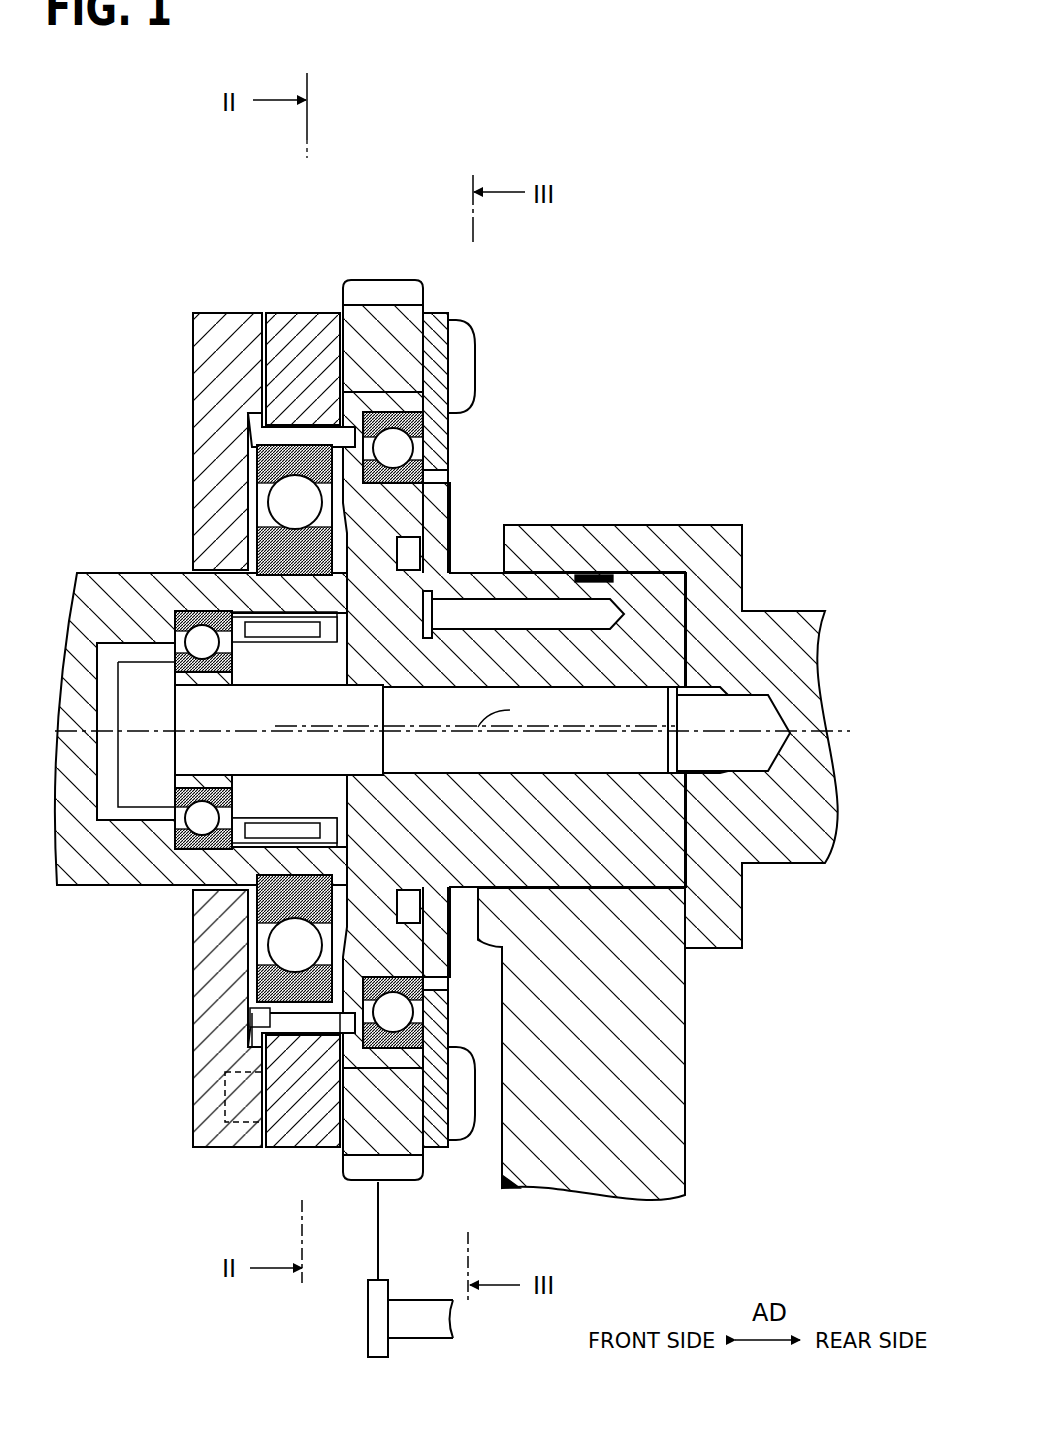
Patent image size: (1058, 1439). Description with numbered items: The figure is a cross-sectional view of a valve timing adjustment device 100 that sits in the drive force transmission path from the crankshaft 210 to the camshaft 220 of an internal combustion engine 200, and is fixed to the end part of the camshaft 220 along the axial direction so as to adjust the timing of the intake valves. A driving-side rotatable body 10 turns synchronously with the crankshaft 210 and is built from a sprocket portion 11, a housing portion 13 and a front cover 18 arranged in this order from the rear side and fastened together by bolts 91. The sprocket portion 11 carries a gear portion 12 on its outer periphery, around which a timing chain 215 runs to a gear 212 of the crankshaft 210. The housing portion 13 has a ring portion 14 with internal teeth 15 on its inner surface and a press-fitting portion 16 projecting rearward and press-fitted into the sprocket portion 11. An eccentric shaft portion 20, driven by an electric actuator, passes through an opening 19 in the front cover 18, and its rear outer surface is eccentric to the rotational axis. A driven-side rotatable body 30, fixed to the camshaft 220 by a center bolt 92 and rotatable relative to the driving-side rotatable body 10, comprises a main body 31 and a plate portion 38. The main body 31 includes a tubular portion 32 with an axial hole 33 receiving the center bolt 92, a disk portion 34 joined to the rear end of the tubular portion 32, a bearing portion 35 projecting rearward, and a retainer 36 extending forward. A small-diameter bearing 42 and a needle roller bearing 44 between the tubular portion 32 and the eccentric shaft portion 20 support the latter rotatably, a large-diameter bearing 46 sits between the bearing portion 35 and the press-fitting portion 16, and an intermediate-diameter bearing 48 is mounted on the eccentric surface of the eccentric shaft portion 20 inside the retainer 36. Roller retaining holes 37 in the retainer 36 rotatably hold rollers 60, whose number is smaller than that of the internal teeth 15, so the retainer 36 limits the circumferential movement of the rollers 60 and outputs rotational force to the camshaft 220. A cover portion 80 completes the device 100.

The valve timing adjustment device 100 is at (742, 140).
The driving-side rotatable body 10 is at (448, 187).
The sprocket portion 11 is at (398, 313).
The gear portion 12 is at (372, 297).
The housing portion 13 is at (308, 312).
The ring portion 14 is at (288, 313).
The internal teeth 15 is at (298, 1028).
The press-fitting portion 16 is at (405, 406).
The front cover 18 is at (238, 313).
The opening 19 is at (190, 614).
The eccentric shaft portion 20 is at (290, 597).
The driven-side rotatable body 30 is at (600, 420).
The main body 31 is at (432, 490).
The tubular portion 32 is at (188, 882).
The axial hole 33 is at (180, 700).
The disk portion 34 is at (380, 845).
The bearing portion 35 is at (455, 527).
The retainer 36 is at (290, 435).
The roller retaining holes 37 is at (300, 1022).
The plate portion 38 is at (458, 527).
The small-diameter bearing 42 is at (195, 885).
The needle roller bearing 44 is at (258, 640).
The large-diameter bearing 46 is at (420, 431).
The intermediate-diameter bearing 48 is at (290, 456).
The rollers 60 is at (283, 1003).
The cover portion 80 is at (446, 313).
The bolts 91 is at (470, 362).
The center bolt 92 is at (200, 745).
The internal combustion engine 200 is at (600, 1247).
The crankshaft 210 is at (395, 1305).
The gear 212 is at (372, 1292).
The timing chain 215 is at (382, 1233).
The camshaft 220 is at (770, 600).